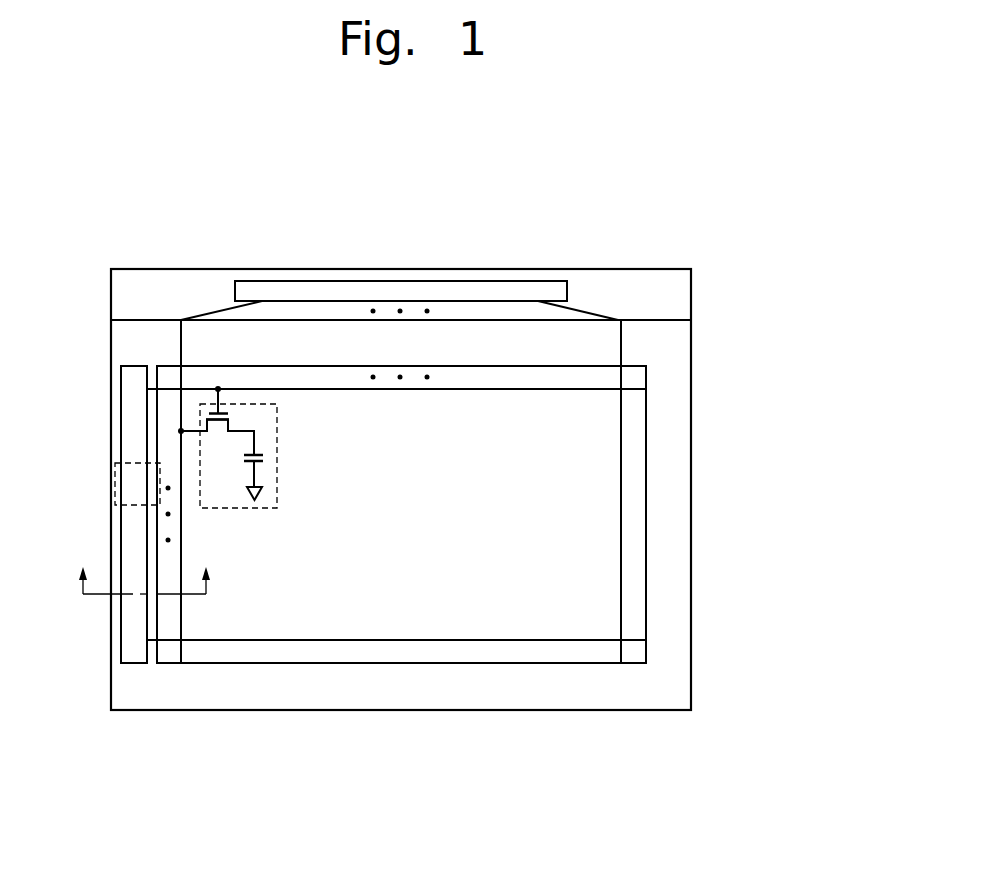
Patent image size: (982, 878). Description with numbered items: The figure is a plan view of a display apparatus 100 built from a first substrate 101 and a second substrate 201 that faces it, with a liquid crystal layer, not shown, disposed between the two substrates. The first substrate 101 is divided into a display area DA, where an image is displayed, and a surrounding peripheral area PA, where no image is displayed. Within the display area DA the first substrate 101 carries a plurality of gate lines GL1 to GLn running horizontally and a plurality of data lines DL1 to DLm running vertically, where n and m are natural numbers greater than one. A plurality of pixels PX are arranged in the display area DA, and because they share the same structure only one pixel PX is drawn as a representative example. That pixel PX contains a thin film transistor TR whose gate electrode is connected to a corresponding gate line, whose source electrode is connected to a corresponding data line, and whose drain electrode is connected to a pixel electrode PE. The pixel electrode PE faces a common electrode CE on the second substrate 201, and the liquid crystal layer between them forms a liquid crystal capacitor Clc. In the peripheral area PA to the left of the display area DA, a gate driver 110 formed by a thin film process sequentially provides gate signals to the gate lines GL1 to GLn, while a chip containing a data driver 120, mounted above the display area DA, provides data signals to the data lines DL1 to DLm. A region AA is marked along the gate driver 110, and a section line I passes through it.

The display apparatus 100 is at (641, 210).
The first substrate 101 is at (691, 292).
The gate driver 110 is at (120, 615).
The data driver 120 is at (385, 280).
The second substrate 201 is at (682, 475).
The first gate line GL1 is at (465, 389).
The n-th gate line GLn is at (462, 640).
The first data line DL1 is at (181, 607).
The m-th data line DLm is at (621, 490).
The pixel PX is at (278, 455).
The thin film transistor TR is at (240, 421).
The liquid crystal capacitor Clc is at (311, 461).
The pixel electrode PE is at (260, 447).
The common electrode CE is at (286, 473).
The area AA is at (115, 483).
The display area DA is at (605, 541).
The peripheral area PA is at (680, 617).
The section line I-I' I is at (145, 570).